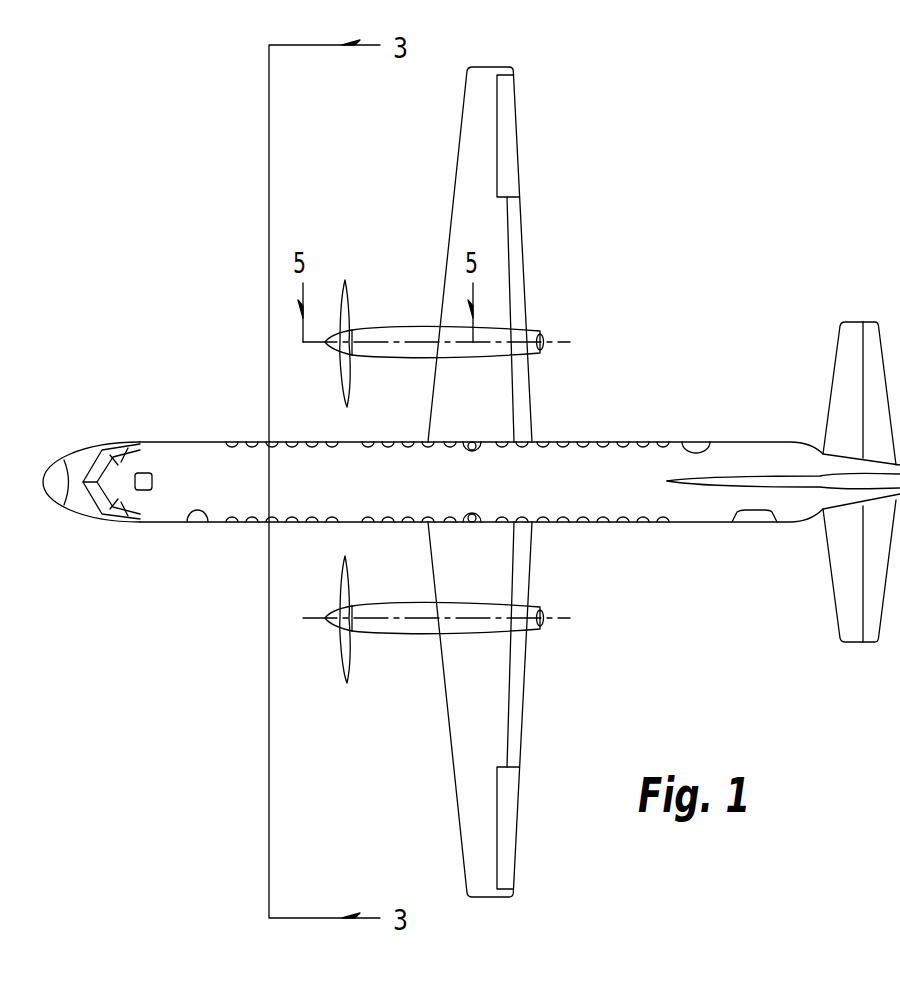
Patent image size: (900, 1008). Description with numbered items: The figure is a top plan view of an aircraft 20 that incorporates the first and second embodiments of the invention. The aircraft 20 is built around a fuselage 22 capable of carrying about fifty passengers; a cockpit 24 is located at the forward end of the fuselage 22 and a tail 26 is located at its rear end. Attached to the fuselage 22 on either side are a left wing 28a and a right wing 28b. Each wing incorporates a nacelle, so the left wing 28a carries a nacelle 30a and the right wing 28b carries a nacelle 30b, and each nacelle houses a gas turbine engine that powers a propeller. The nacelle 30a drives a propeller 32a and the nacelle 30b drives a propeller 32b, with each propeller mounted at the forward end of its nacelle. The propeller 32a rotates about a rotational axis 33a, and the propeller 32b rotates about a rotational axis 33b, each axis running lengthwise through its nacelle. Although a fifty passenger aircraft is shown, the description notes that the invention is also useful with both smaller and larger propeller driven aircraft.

The aircraft 20 is at (726, 215).
The fuselage 22 is at (333, 488).
The cockpit 24 is at (132, 442).
The tail 26 is at (820, 447).
The left wing 28a is at (453, 757).
The right wing 28b is at (463, 113).
The nacelle 30a is at (473, 637).
The nacelle 30b is at (418, 327).
The propeller 32a is at (334, 664).
The propeller 32b is at (341, 382).
The rotational axis 33a is at (390, 617).
The rotational axis 33b is at (488, 342).